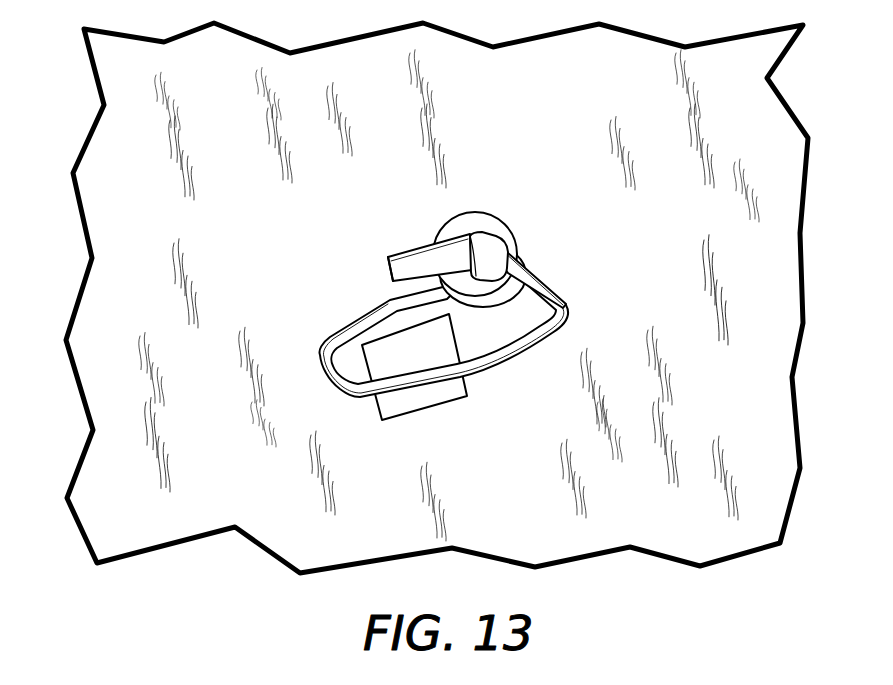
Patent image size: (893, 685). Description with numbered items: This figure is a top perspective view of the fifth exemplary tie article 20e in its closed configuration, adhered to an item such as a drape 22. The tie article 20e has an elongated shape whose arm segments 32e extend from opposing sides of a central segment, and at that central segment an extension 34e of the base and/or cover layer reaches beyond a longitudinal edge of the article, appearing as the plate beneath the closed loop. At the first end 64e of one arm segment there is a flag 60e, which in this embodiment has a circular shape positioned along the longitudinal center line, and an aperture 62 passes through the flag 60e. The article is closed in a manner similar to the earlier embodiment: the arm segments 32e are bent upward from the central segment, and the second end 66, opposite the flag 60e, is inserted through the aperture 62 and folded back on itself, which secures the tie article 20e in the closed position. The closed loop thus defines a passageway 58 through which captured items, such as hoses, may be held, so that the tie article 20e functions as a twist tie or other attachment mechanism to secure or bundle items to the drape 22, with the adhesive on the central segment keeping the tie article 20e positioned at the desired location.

The tie article 20e is at (470, 275).
The drape 22 is at (492, 459).
The arm segments 32e is at (378, 297).
The extension 34e is at (418, 395).
The passageway 58 is at (487, 315).
The flag 60e is at (465, 218).
The aperture 62 is at (487, 252).
The first end 64e is at (432, 233).
The second end 66 is at (388, 270).